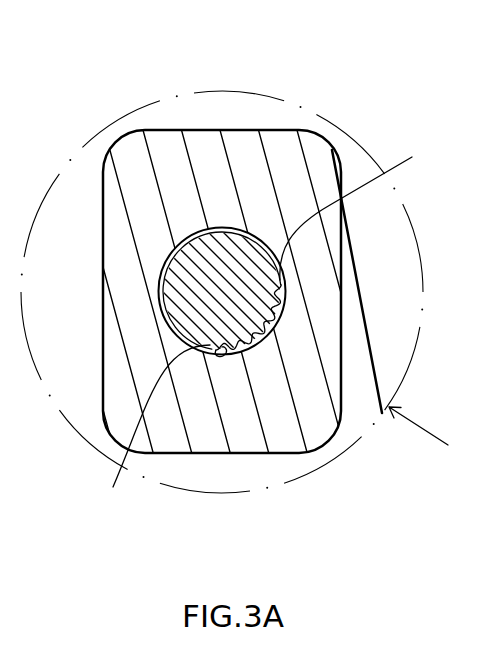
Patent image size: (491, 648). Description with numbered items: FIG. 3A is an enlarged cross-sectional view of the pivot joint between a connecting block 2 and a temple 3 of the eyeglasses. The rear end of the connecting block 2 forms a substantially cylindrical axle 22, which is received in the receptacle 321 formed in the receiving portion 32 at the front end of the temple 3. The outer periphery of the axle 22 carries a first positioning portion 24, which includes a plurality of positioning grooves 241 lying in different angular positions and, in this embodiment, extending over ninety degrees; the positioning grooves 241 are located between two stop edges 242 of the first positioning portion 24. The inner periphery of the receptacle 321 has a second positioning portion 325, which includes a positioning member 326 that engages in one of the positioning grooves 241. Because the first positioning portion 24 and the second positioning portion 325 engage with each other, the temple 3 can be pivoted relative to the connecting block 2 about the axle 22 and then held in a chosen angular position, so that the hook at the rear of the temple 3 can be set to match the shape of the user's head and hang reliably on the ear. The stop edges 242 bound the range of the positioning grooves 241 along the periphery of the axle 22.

The connecting block 2 is at (230, 265).
The temple 3 is at (383, 249).
The axle 22 is at (185, 283).
The first positioning portion 24 is at (269, 351).
The receiving portion 32 is at (278, 157).
The positioning grooves 241 is at (220, 357).
The stop edges 242 is at (272, 327).
The receptacle 321 is at (203, 232).
The second positioning portion 325 is at (218, 356).
The positioning member 326 is at (240, 352).